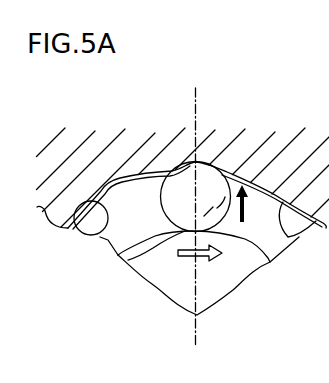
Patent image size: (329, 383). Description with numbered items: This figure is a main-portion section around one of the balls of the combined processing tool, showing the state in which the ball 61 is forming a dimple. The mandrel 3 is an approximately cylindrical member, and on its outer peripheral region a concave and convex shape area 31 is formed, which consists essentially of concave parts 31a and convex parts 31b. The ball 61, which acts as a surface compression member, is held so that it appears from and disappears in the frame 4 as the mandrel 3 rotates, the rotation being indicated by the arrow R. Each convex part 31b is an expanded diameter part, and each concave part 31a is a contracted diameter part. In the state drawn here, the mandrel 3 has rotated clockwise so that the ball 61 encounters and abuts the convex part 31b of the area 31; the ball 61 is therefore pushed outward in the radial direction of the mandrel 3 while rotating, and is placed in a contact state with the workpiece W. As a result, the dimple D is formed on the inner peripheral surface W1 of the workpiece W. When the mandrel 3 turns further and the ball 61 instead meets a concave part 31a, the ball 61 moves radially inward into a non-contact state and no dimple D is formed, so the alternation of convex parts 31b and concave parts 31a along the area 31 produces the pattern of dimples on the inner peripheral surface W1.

The workpiece W is at (113, 152).
The ball 61 is at (204, 162).
The dimple D is at (88, 234).
The frame 4 is at (116, 224).
The inner peripheral surface W1 is at (289, 237).
The mandrel 3 is at (188, 301).
The concave and convex shape area 31 is at (173, 301).
The concave part 31a is at (186, 238).
The convex part 31b is at (129, 260).
The rotation of the mandrel R is at (200, 264).